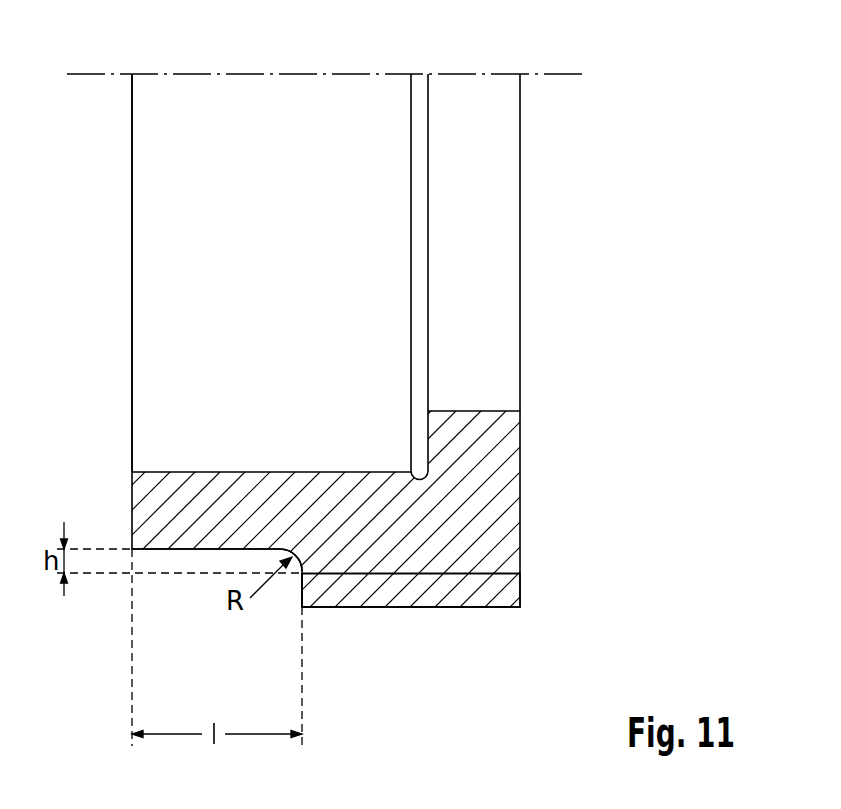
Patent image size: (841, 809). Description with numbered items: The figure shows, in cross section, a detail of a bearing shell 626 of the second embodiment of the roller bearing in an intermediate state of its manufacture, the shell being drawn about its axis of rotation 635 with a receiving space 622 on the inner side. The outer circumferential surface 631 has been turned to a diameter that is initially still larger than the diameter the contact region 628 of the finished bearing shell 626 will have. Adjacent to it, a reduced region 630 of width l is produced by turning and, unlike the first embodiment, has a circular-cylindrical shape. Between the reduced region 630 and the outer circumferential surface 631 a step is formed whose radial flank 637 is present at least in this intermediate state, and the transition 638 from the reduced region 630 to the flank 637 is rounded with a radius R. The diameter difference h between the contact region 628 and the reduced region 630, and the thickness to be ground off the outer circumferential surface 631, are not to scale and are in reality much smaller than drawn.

The axis of rotation 635 is at (83, 74).
The bearing shell 626 is at (548, 290).
The receiving space 622 is at (310, 284).
The first contact region 628 is at (472, 578).
The outer circumferential surface 631 is at (418, 607).
The reduced region 630 is at (205, 549).
The flank 637 is at (297, 596).
The rounded transition 638 is at (293, 563).